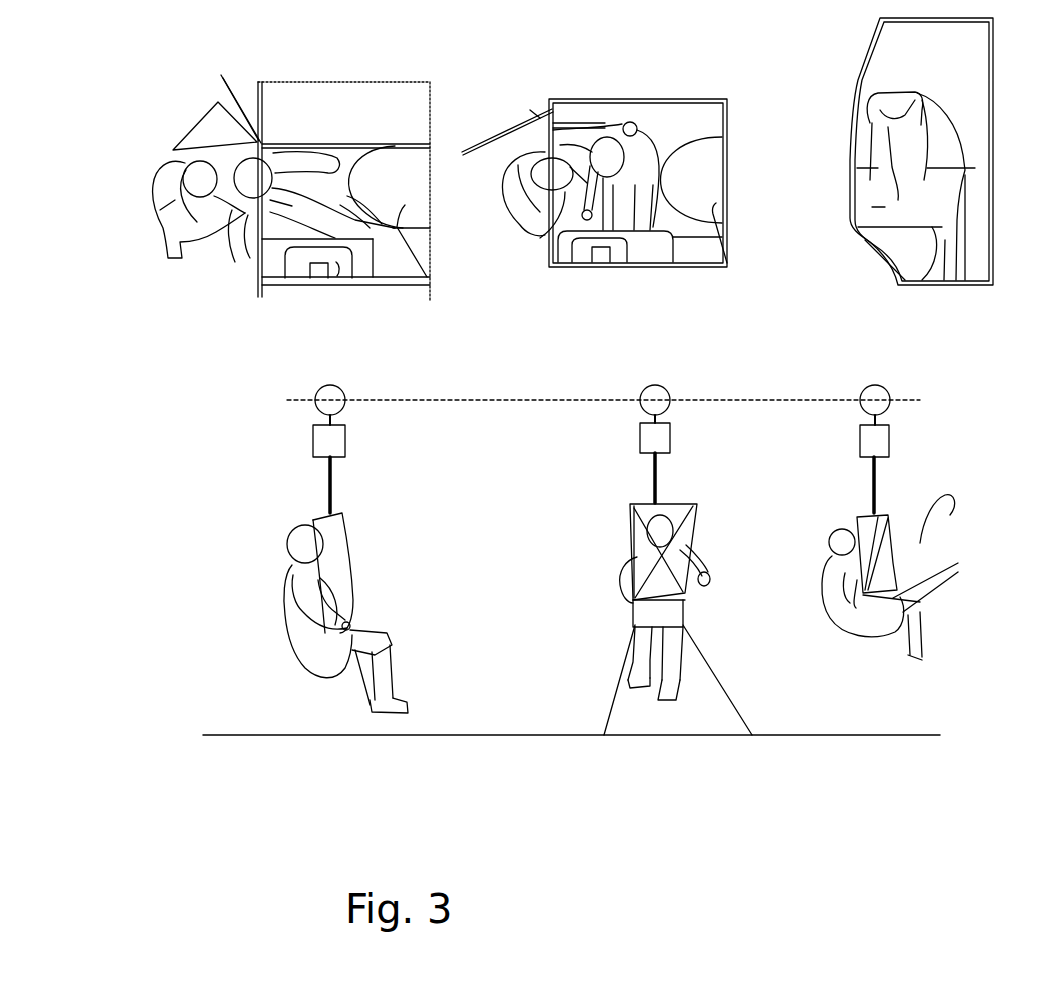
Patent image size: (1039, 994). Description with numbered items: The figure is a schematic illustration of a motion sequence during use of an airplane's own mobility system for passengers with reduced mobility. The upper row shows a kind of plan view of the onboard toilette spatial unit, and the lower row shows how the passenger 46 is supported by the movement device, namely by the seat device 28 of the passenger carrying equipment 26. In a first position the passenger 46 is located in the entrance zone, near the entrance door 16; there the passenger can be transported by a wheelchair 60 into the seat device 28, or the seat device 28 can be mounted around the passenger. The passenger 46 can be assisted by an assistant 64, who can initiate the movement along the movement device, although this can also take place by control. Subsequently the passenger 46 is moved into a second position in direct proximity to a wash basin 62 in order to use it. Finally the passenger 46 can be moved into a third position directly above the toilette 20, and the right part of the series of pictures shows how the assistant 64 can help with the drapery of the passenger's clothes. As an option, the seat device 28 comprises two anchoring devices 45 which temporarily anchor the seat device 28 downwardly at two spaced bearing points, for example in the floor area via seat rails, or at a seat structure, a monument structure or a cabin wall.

The entrance door 16 is at (535, 112).
The toilette 20 is at (428, 287).
The passenger carrying equipment 26 is at (359, 534).
The seat device 28 is at (360, 593).
The anchoring devices 45 is at (607, 700).
The passenger 46 is at (233, 253).
The wheelchair 60 is at (221, 76).
The wash basin 62 is at (337, 281).
The assistant 64 is at (153, 207).